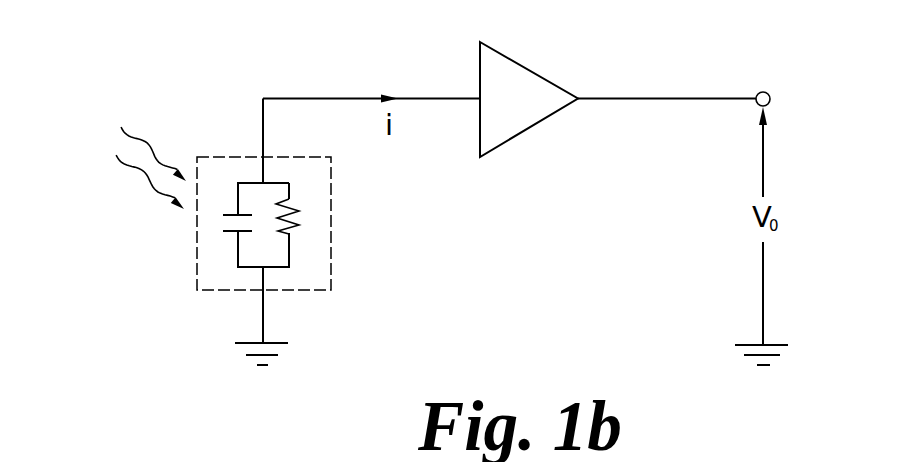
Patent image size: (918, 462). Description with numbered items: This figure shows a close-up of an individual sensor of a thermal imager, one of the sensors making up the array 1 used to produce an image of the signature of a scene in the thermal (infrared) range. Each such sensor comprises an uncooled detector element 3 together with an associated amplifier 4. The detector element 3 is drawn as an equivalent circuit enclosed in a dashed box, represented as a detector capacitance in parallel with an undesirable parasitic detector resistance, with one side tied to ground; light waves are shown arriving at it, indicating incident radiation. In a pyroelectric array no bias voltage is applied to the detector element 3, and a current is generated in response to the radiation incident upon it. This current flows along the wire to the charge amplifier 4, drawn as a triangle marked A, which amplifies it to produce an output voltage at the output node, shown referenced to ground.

The array 1 is at (371, 70).
The uncooled detector element 3 is at (322, 290).
The amplifier 4 is at (533, 68).